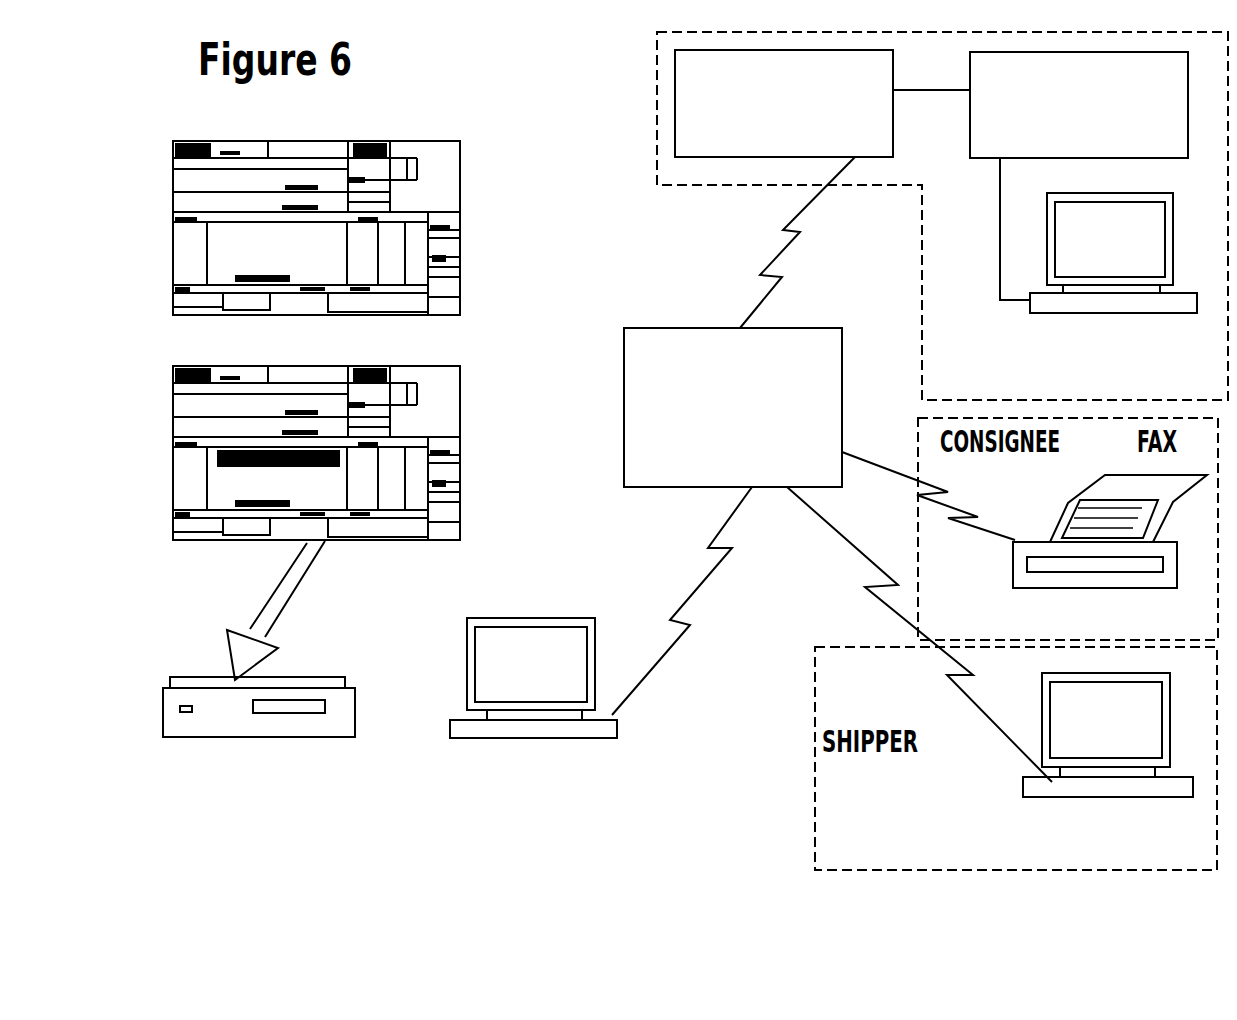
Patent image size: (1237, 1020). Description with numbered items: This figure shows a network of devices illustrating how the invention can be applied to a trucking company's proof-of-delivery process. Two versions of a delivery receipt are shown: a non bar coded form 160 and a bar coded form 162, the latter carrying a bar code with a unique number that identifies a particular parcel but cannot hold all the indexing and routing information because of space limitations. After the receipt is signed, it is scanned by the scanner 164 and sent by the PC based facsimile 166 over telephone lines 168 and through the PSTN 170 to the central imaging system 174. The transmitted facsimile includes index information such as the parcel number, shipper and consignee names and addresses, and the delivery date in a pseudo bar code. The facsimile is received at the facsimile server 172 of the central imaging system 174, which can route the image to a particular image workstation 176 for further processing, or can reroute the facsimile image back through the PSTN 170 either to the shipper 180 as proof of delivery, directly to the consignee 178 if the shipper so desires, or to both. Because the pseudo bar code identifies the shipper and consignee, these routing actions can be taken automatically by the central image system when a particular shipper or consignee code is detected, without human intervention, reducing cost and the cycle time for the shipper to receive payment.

The non bar coded delivery receipt 160 is at (349, 228).
The bar coded delivery receipt 162 is at (361, 453).
The scanner 164 is at (238, 704).
The PC based facsimile 166 is at (565, 718).
The telephone lines 168 is at (682, 601).
The PSTN 170 is at (733, 407).
The facsimile server 172 is at (784, 103).
The central imaging system 174 is at (1079, 105).
The image workstation 176 is at (1075, 292).
The consignee 178 is at (1074, 556).
The shipper 180 is at (1057, 770).